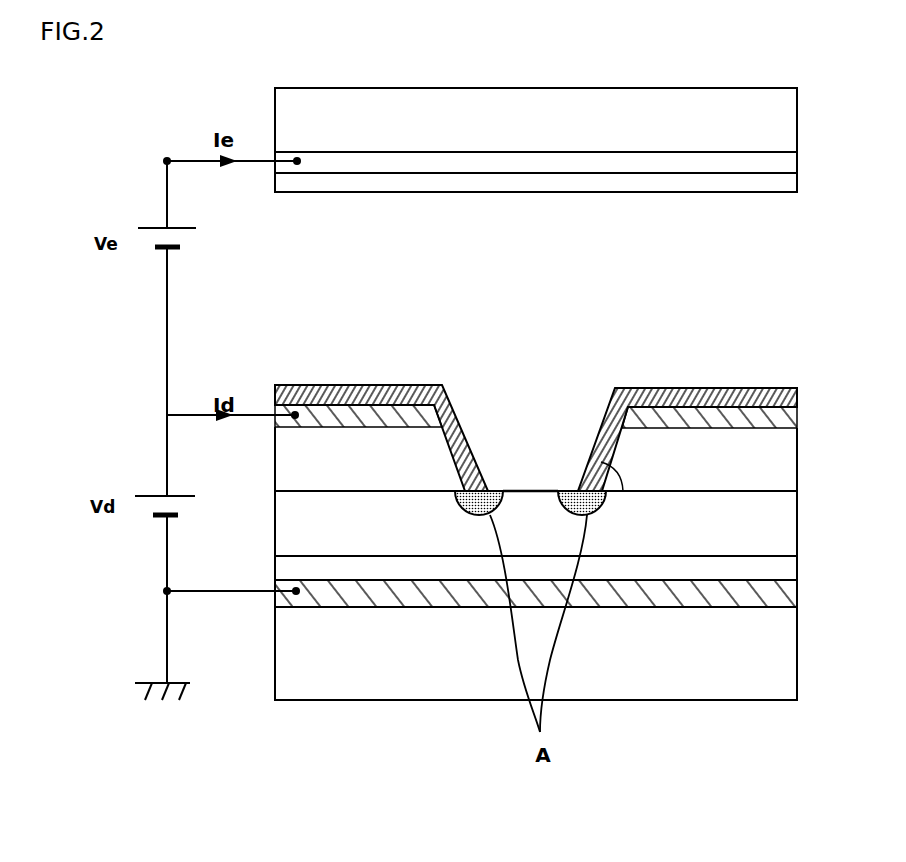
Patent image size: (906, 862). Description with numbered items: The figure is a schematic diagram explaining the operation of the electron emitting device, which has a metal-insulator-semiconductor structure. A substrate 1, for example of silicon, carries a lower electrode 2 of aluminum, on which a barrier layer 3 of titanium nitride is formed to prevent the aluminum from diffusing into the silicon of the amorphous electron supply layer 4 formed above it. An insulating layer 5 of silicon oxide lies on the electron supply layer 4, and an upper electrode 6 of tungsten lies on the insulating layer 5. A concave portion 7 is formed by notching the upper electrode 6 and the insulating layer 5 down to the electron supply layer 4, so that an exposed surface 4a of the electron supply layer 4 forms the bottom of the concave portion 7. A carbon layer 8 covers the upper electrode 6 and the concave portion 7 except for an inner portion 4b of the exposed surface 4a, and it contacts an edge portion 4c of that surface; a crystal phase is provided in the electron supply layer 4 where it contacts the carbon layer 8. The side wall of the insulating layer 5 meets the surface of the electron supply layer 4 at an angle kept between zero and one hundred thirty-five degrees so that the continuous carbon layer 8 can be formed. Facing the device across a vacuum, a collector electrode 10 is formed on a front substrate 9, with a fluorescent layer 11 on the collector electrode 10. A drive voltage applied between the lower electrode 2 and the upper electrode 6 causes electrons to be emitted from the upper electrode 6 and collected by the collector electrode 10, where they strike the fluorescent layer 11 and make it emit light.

The substrate 1 is at (780, 656).
The lower electrode 2 is at (780, 597).
The barrier layer 3 is at (778, 571).
The electron supply layer 4 is at (778, 527).
The exposed surface 4a is at (475, 405).
The inner portion 4b is at (521, 490).
The edge portion 4c is at (486, 484).
The insulating layer 5 is at (780, 458).
The upper electrode 6 is at (782, 412).
The concave portion 7 is at (588, 414).
The carbon layer 8 is at (797, 393).
The front substrate 9 is at (790, 126).
The collector electrode 10 is at (790, 160).
The fluorescent layer 11 is at (790, 182).